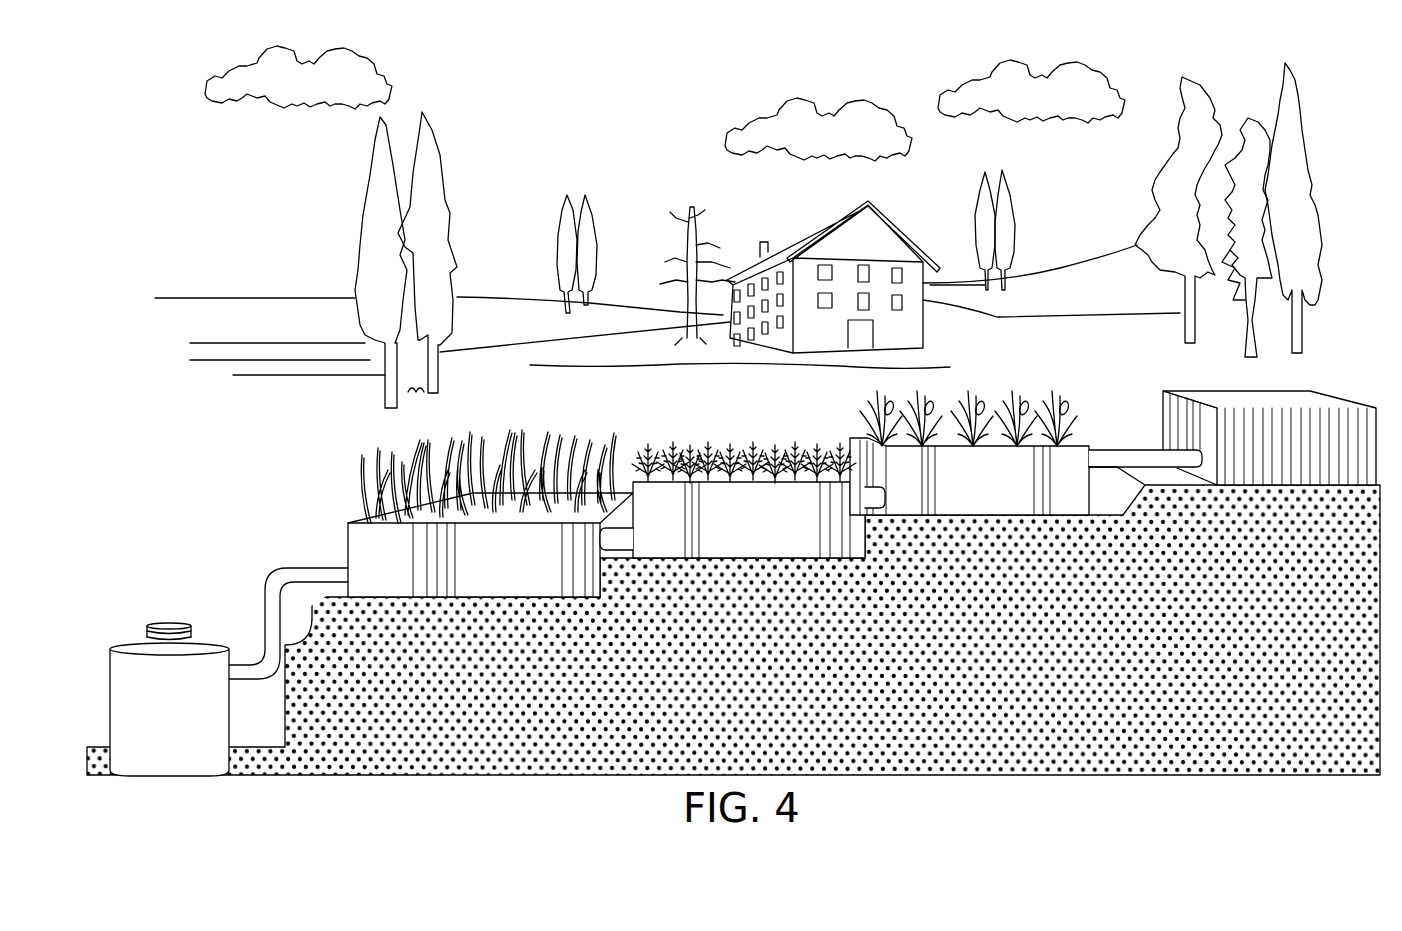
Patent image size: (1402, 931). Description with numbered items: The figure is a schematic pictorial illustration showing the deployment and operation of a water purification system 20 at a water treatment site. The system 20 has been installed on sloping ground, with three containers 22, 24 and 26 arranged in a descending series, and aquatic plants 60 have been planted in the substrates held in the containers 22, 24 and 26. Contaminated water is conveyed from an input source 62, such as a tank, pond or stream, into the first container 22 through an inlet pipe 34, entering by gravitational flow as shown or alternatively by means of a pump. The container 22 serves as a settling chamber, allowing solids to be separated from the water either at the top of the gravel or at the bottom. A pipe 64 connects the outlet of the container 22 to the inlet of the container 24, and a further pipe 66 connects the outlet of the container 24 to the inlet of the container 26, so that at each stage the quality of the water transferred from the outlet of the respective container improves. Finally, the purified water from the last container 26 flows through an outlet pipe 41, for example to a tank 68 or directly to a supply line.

The water purification system 20 is at (1103, 400).
The container 22 is at (859, 449).
The container 24 is at (633, 482).
The container 26 is at (358, 541).
The inlet pipe 34 is at (1122, 468).
The outlet pipe 41 is at (272, 610).
The aquatic plants 60 is at (587, 457).
The input source 62 is at (1332, 405).
The pipe 64 is at (870, 498).
The pipe 66 is at (618, 535).
The tank 68 is at (160, 644).